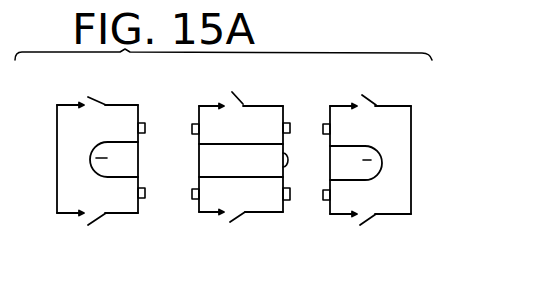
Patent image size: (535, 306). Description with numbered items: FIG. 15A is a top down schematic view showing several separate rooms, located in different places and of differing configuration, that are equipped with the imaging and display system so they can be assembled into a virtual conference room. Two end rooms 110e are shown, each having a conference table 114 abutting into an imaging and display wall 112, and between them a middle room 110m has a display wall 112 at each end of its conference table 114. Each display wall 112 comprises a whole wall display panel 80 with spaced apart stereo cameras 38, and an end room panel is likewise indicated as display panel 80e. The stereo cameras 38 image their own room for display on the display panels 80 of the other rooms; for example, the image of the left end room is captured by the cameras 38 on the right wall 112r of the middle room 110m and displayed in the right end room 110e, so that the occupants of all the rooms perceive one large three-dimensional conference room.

The conference table 114 is at (107, 158).
The whole wall display panel 80 is at (128, 133).
The stereo cameras 38 is at (192, 128).
The end room display panel 80e is at (216, 135).
The middle room 110m is at (292, 92).
The right wall 112r is at (138, 160).
The imaging and display wall 112 is at (200, 165).
The end room 110e is at (60, 228).